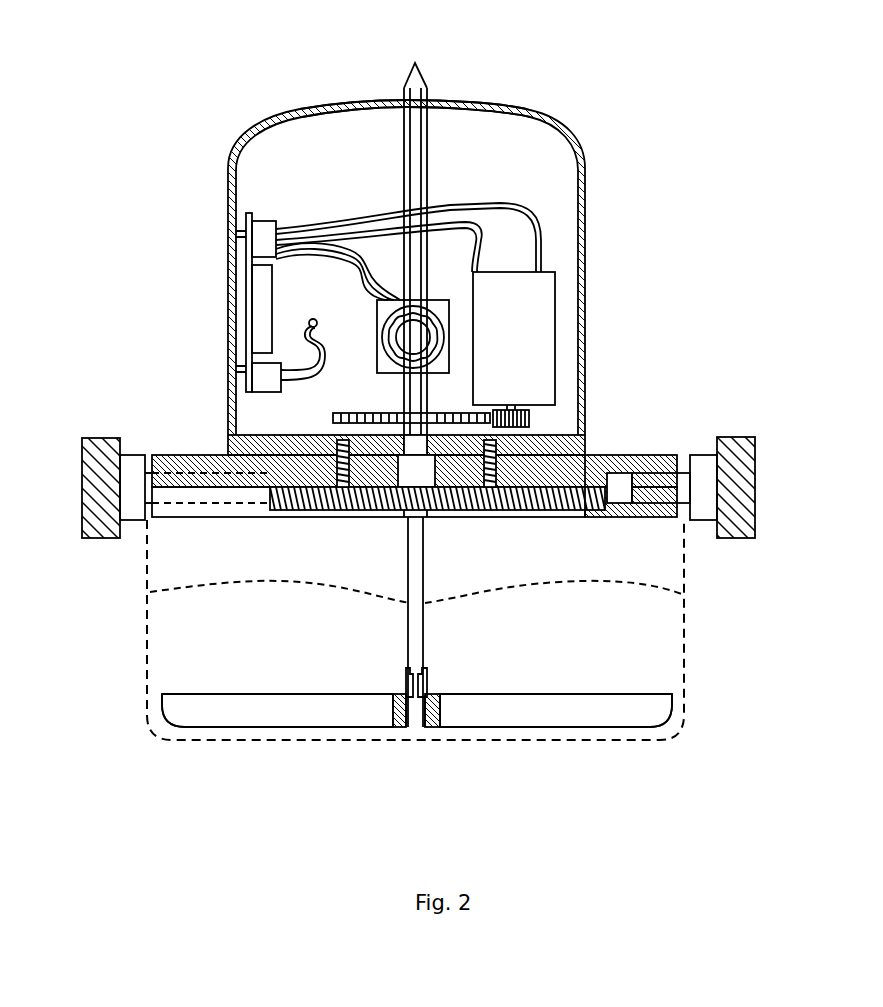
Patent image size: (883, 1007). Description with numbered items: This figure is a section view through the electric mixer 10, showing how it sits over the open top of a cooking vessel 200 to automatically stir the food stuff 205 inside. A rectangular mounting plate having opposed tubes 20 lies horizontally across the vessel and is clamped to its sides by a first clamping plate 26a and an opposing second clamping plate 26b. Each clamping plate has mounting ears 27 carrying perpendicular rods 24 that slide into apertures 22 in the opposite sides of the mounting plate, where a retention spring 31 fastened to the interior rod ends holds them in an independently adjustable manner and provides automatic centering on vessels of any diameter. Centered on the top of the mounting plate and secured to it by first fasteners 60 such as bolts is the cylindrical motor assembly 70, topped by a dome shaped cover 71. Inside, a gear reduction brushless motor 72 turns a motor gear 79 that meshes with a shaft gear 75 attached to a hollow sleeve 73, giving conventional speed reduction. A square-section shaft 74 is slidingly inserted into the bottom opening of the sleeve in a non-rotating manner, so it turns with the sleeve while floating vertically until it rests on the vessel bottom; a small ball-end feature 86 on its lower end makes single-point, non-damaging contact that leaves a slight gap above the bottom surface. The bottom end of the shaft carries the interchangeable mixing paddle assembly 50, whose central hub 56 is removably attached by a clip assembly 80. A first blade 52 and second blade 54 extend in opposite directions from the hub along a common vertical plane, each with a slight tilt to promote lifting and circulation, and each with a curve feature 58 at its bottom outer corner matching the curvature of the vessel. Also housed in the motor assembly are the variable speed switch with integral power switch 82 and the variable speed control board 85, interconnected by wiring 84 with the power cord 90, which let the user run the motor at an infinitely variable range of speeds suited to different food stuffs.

The electric mixer 10 is at (419, 240).
The mounting plate having opposed tubes 20 is at (200, 455).
The aperture 22 is at (172, 458).
The rod 24 is at (150, 480).
The first clamping plate 26a is at (90, 440).
The second clamping plate 26b is at (728, 440).
The mounting ear 27 is at (131, 497).
The retention spring 31 is at (578, 500).
The mixing paddle assembly 50 is at (418, 711).
The first blade 52 is at (293, 715).
The second blade 54 is at (590, 715).
The hub 56 is at (440, 700).
The curve feature 58 is at (170, 722).
The first fastener 60 is at (343, 497).
The motor assembly 70 is at (587, 192).
The dome shaped cover 71 is at (538, 119).
The gear reduction brushless motor 72 is at (525, 303).
The hollow sleeve 73 is at (473, 106).
The shaft 74 is at (430, 86).
The shaft gear 75 is at (332, 420).
The motor gear 79 is at (530, 410).
The clip assembly 80 is at (428, 668).
The variable speed switch with integral power switch 82 is at (385, 300).
The wiring 84 is at (318, 222).
The variable speed control board 85 is at (247, 300).
The ball-end feature 86 is at (417, 728).
The power cord 90 is at (310, 326).
The cooking vessel 200 is at (685, 675).
The food stuff 205 is at (290, 592).